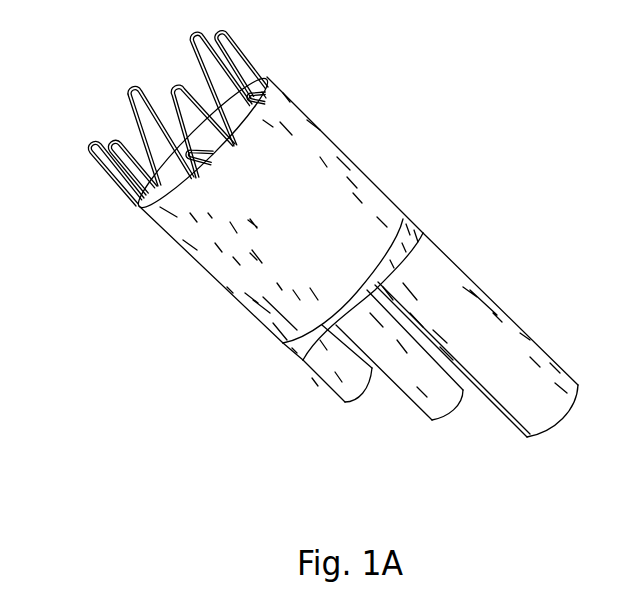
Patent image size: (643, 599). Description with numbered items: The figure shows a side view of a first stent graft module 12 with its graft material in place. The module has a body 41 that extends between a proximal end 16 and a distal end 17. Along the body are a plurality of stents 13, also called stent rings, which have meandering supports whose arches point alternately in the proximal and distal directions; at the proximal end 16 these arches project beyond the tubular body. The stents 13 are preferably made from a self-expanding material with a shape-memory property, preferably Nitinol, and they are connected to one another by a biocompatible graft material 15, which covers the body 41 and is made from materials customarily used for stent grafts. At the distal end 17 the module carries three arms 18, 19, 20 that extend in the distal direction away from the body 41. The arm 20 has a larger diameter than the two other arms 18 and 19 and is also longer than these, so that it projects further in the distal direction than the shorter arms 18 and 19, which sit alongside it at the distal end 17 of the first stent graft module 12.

The first stent graft module 12 is at (294, 202).
The stent 13 is at (113, 176).
The graft material 15 is at (386, 198).
The proximal end 16 is at (152, 113).
The distal end 17 is at (465, 399).
The arm 18 is at (313, 373).
The arm 19 is at (415, 402).
The arm 20 is at (530, 332).
The body 41 is at (277, 263).